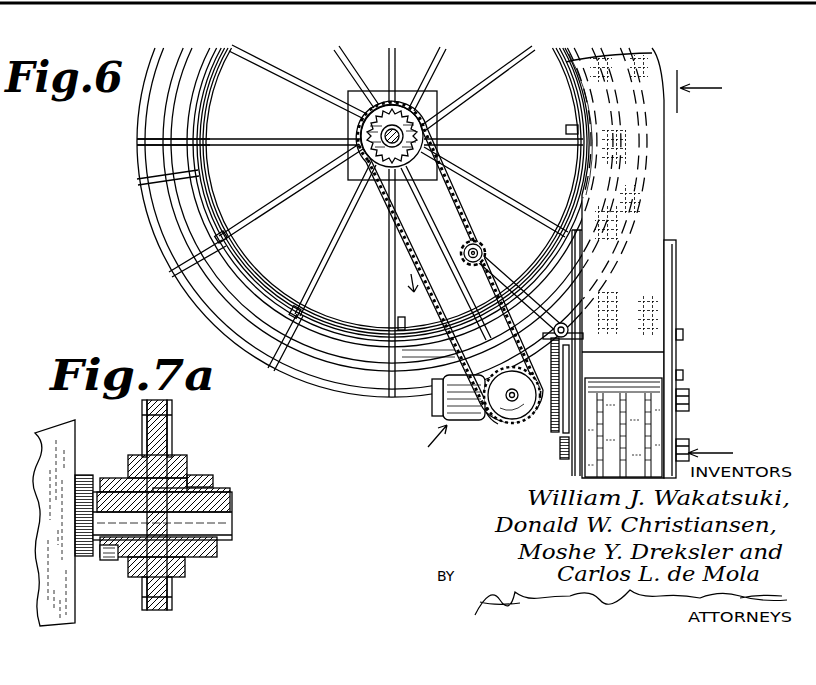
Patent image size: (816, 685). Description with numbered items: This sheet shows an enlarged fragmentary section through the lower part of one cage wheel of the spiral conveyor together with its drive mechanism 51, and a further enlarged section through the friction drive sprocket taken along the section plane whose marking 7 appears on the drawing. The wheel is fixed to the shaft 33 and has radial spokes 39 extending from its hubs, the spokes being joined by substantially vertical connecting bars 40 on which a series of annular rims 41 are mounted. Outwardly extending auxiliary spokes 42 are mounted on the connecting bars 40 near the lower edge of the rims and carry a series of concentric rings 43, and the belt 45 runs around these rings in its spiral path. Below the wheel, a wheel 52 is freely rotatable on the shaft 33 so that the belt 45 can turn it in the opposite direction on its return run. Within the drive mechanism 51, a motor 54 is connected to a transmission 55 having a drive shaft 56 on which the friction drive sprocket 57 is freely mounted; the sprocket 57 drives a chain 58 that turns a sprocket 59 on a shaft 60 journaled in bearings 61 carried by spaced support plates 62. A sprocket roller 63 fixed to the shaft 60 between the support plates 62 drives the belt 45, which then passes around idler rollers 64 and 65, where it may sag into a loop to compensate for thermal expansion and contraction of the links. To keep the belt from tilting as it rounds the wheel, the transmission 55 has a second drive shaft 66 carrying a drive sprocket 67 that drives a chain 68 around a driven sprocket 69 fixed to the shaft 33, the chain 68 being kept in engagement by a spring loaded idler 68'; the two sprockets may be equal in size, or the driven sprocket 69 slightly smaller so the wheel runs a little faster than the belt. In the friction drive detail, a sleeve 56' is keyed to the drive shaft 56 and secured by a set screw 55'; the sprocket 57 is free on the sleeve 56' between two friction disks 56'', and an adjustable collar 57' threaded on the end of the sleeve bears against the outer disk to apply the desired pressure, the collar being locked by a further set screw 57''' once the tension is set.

In FIG. 6, the section line 7- 7 is at (705, 261).
In FIG. 6, the shaft 33 is at (362, 148).
In FIG. 6, the radial spokes 39 is at (334, 98).
In FIG. 6, the connecting bars 40 is at (213, 145).
In FIG. 6, the annular rims 41 is at (206, 98).
In FIG. 6, the auxiliary spokes 42 is at (145, 140).
In FIG. 6, the concentric rings 43 is at (190, 166).
In FIG. 6, the belt 45 is at (662, 206).
In FIG. 6, the drive mechanism 51 is at (425, 369).
In FIG. 6, the wheel 52 is at (148, 248).
In FIG. 6, the motor 54 is at (432, 410).
In FIG. 6, the transmission 55 is at (430, 354).
In FIG. 7a, the transmission 55 is at (41, 515).
In FIG. 7a, the set screw 55' is at (92, 527).
In FIG. 7a, the drive shaft 56 is at (185, 514).
In FIG. 7a, the sleeve 56' is at (146, 573).
In FIG. 7a, the friction disks 56'' is at (160, 590).
In FIG. 6, the friction drive sprocket 57 is at (549, 295).
In FIG. 7a, the friction drive sprocket 57 is at (172, 505).
In FIG. 7a, the adjustable collar 57' is at (156, 468).
In FIG. 7a, the retaining block 57''' is at (200, 476).
In FIG. 6, the chain 58 is at (575, 367).
In FIG. 6, the sprocket 59 is at (555, 432).
In FIG. 6, the shaft 60 is at (563, 440).
In FIG. 6, the bearings 61 is at (689, 401).
In FIG. 6, the support plates 62 is at (572, 249).
In FIG. 6, the sprocket roller 63 is at (683, 375).
In FIG. 6, the idler roller 64 is at (682, 445).
In FIG. 6, the idler roller 65 is at (678, 332).
In FIG. 6, the second drive shaft 66 is at (513, 384).
In FIG. 6, the drive sprocket 67 is at (490, 425).
In FIG. 6, the chain 68 is at (449, 261).
In FIG. 6, the spring loaded idler 68' is at (481, 238).
In FIG. 6, the driven sprocket 69 is at (417, 127).